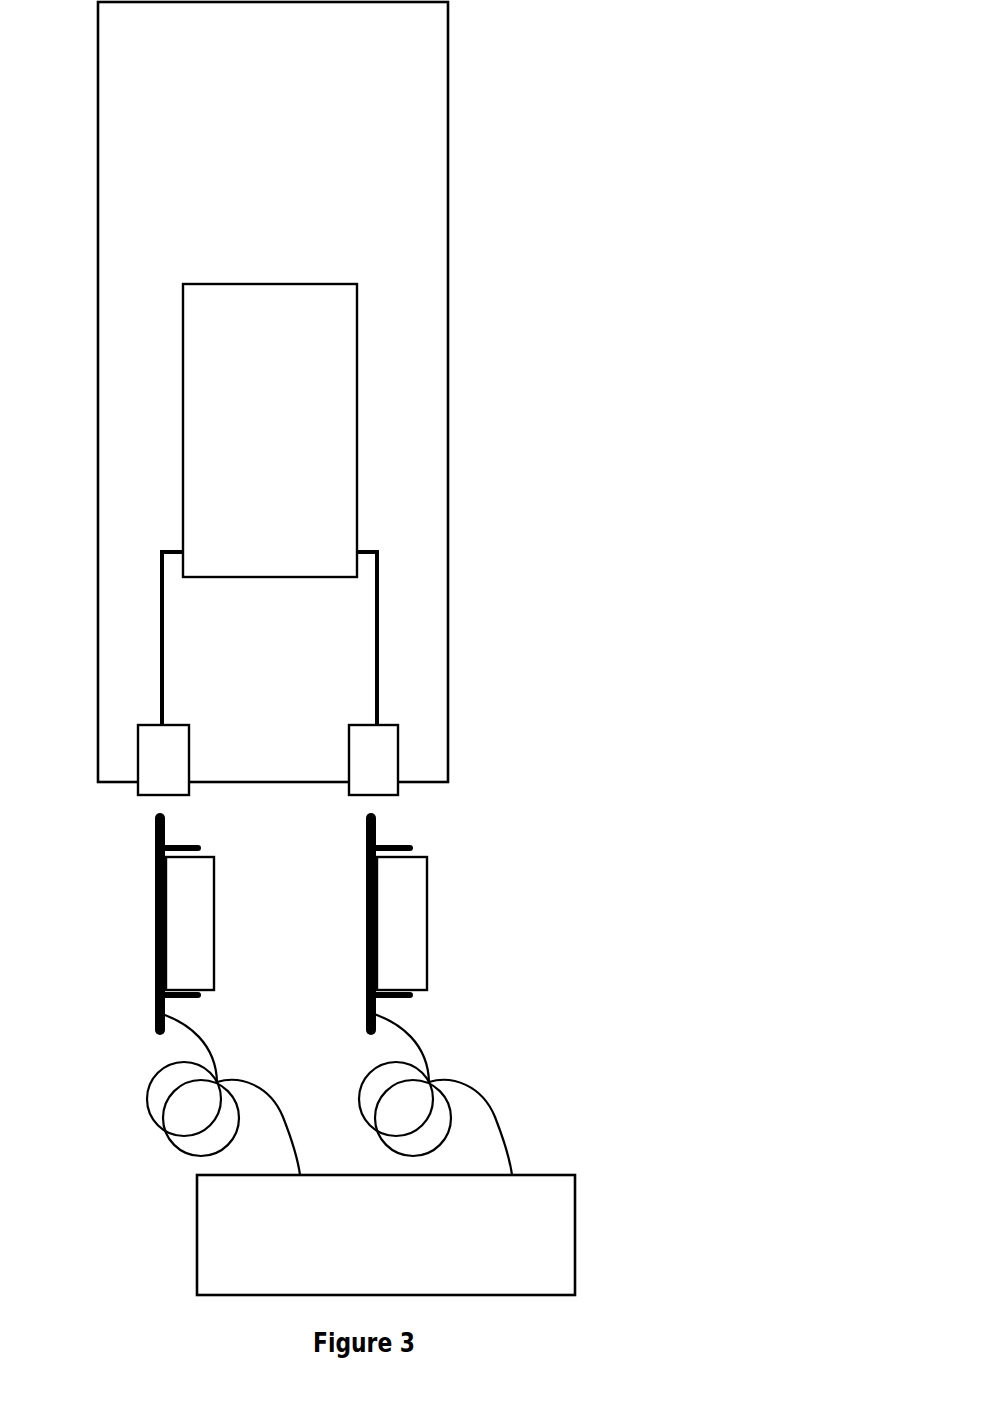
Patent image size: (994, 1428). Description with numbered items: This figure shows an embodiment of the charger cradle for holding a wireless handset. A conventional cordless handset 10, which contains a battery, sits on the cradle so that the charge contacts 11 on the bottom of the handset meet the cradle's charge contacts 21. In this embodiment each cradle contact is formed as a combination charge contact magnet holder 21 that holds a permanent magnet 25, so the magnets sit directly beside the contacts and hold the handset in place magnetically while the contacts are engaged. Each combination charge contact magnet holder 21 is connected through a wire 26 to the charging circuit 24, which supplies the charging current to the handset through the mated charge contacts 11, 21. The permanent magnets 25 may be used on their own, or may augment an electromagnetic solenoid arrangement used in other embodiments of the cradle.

The cordless handset 10 is at (448, 124).
The charge contacts 11 is at (155, 750).
The charge contacts 21 is at (155, 848).
The permanent magnets 25 is at (680, 1002).
The wire 26 is at (493, 1102).
The charging circuit 24 is at (580, 1232).